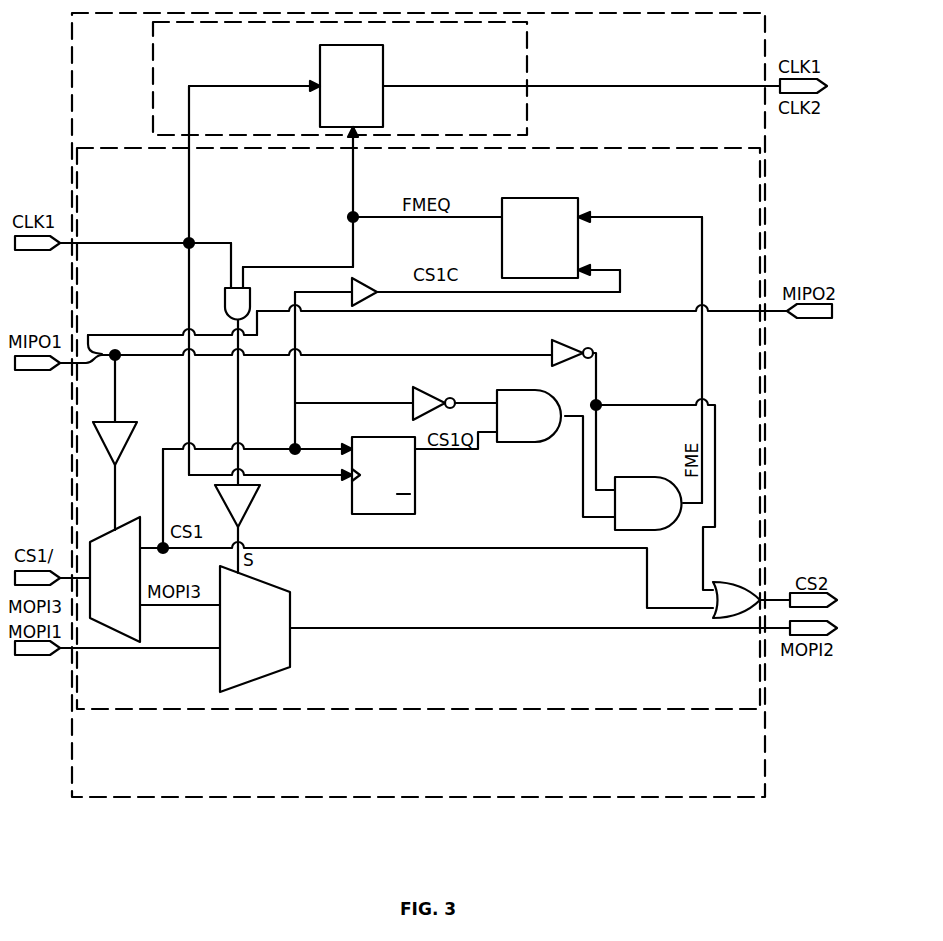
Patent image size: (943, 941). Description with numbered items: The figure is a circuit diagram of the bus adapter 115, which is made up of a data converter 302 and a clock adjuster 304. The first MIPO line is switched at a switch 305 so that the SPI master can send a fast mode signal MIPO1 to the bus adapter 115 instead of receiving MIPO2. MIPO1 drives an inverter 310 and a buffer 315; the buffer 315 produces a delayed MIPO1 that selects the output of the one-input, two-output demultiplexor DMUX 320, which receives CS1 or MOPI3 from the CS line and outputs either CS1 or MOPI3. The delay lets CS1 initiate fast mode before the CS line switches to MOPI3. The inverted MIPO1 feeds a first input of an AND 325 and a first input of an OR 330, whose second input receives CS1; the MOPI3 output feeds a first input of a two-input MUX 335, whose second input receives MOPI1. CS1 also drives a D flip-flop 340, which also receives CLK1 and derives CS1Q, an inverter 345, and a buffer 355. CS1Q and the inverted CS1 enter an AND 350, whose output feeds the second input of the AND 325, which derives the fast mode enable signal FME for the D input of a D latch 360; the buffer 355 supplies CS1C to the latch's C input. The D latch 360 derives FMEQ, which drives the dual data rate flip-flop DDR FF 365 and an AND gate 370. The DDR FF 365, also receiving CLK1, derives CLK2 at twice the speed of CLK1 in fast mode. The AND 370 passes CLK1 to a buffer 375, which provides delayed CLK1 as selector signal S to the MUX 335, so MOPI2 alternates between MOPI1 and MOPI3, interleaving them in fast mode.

The bus adapter 115 is at (418, 405).
The data converter 302 is at (418, 428).
The clock adjuster 304 is at (340, 78).
The switch 305 is at (88, 335).
The inverter 310 is at (594, 346).
The buffer 315 is at (127, 420).
The demultiplexor 320 is at (115, 579).
The AND 325 is at (642, 477).
The OR 330 is at (742, 582).
The MUX 335 is at (255, 629).
The D flip-flop 340 is at (415, 490).
The inverter 345 is at (428, 392).
The AND 350 is at (527, 443).
The buffer 355 is at (369, 277).
The D latch 360 is at (546, 198).
The dual data rate flip-flop 365 is at (383, 103).
The AND gate 370 is at (225, 294).
The buffer 375 is at (258, 495).